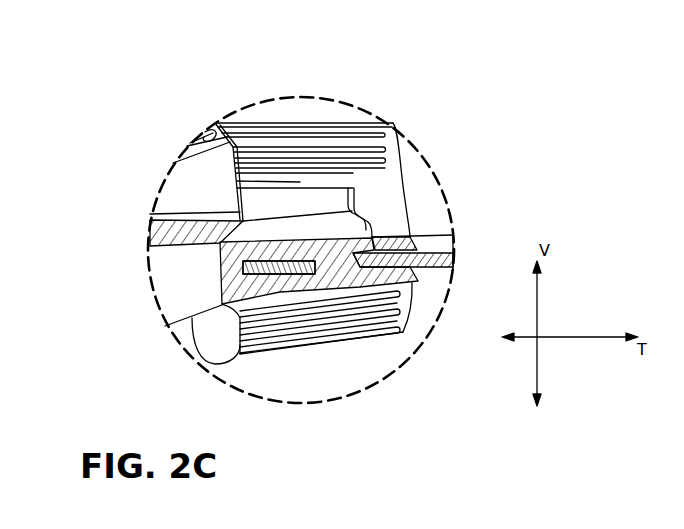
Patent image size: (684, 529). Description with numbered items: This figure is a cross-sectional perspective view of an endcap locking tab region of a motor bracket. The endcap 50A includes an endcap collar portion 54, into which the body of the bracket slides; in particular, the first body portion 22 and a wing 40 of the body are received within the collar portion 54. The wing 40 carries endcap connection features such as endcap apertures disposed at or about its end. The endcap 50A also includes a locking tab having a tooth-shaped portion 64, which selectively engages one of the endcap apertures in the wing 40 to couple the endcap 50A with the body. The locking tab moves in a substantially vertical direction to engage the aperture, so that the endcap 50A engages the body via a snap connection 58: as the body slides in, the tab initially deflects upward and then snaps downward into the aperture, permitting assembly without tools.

The endcap 50A is at (174, 145).
The endcap collar portion 54 is at (305, 112).
The first body portion 22 is at (422, 202).
The snap connection 58 is at (345, 217).
The tooth-shaped portion 64 is at (322, 264).
The wing 40 is at (432, 249).